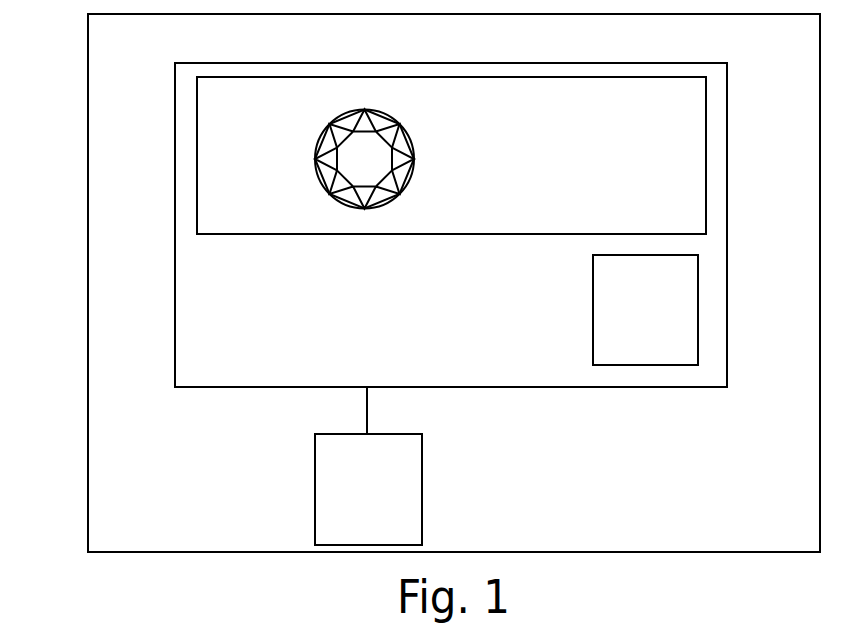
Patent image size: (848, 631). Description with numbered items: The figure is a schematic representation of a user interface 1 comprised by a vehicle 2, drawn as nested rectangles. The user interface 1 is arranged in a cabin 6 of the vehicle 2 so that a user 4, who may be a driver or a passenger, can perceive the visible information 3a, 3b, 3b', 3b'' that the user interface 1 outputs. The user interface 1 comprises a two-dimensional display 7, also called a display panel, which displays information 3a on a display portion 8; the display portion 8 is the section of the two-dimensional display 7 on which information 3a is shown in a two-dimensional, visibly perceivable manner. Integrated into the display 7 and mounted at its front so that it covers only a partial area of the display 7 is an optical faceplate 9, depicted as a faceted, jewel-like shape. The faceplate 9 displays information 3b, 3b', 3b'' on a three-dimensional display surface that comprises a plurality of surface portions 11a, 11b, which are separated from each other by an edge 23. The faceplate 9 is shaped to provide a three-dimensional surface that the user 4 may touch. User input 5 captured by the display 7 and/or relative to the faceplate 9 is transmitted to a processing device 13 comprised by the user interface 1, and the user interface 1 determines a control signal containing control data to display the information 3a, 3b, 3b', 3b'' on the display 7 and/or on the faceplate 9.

The user interface 1 is at (206, 388).
The vehicle 2 is at (88, 283).
The information 3a is at (451, 155).
The information 3b is at (312, 105).
The information 3b' is at (364, 97).
The information 3b'' is at (400, 116).
The user 4 is at (368, 489).
The user input 5 is at (367, 400).
The cabin 6 is at (746, 506).
The two-dimensional display 7 is at (225, 234).
The display portion 8 is at (277, 218).
The optical faceplate 9 is at (370, 116).
The surface portion 11a is at (354, 203).
The surface portion 11b is at (394, 200).
The processing device 13 is at (645, 365).
The edge 23 is at (374, 203).